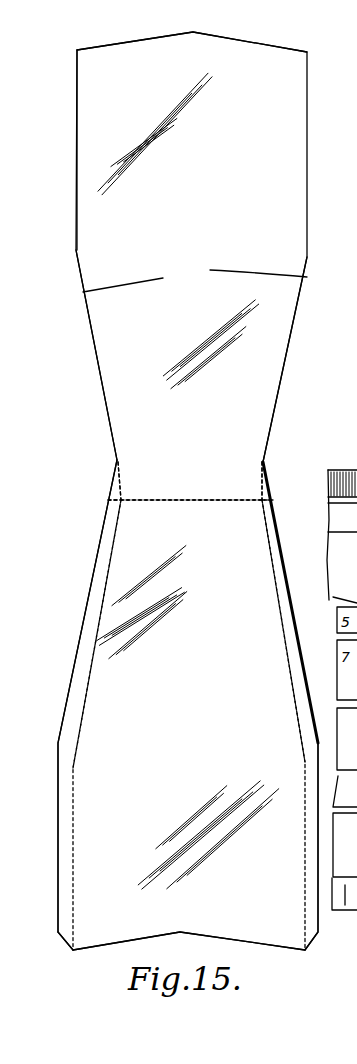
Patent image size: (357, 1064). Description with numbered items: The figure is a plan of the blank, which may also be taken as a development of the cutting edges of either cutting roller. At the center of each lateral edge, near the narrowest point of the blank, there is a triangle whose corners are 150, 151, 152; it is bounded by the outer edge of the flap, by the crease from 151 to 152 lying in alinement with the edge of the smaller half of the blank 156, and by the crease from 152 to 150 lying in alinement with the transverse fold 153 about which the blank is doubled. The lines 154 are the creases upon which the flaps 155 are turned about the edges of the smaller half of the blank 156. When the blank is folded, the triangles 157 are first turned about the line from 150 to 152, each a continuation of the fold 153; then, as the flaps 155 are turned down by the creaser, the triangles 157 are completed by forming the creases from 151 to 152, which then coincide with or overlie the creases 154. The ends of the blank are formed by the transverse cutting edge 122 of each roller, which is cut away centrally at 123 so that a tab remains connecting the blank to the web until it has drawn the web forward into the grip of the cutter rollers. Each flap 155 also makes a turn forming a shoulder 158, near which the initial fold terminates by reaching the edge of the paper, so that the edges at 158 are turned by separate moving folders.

The transverse cutting edge 122 is at (113, 42).
The central cut-away of the transverse cutting edge 123 is at (205, 33).
The triangle corner 150 is at (108, 500).
The triangle corner 151 is at (117, 460).
The triangle apex 152 is at (127, 500).
The transverse fold 153 is at (197, 502).
The creases 154 is at (101, 607).
The flaps 155 is at (67, 750).
The smaller half of the blank 156 is at (195, 277).
The triangles 157 is at (114, 490).
The shoulder 158 is at (317, 747).